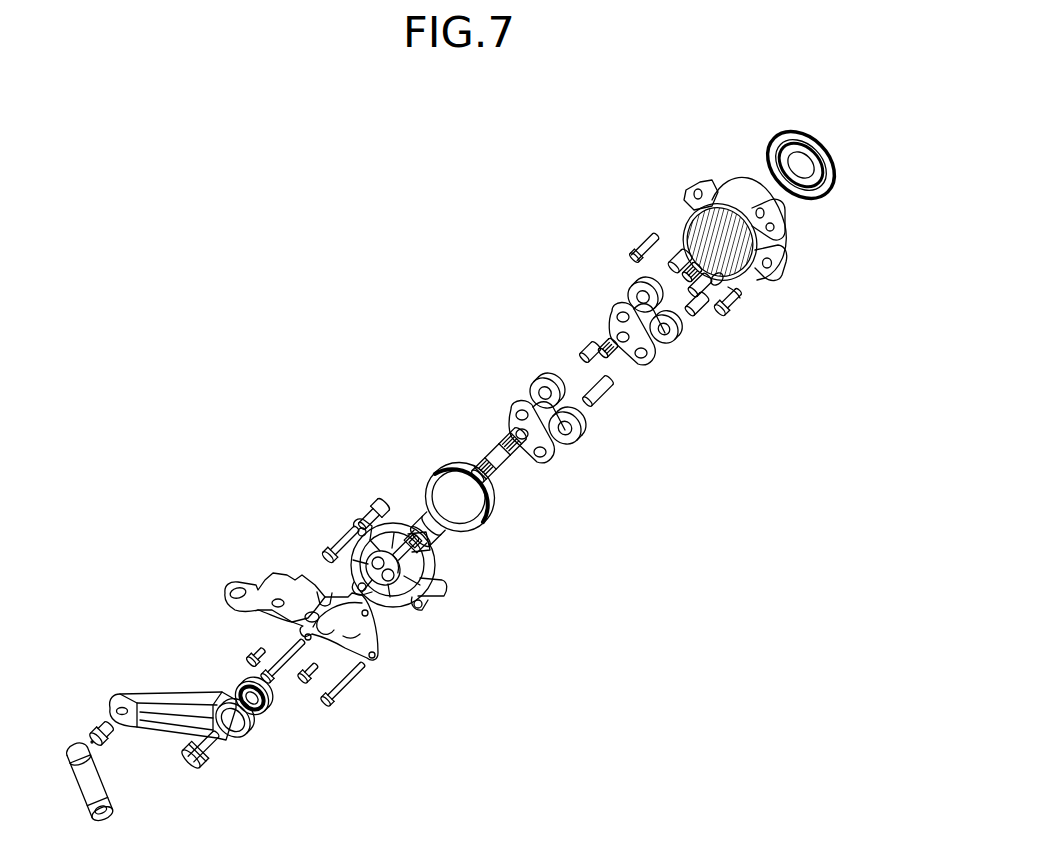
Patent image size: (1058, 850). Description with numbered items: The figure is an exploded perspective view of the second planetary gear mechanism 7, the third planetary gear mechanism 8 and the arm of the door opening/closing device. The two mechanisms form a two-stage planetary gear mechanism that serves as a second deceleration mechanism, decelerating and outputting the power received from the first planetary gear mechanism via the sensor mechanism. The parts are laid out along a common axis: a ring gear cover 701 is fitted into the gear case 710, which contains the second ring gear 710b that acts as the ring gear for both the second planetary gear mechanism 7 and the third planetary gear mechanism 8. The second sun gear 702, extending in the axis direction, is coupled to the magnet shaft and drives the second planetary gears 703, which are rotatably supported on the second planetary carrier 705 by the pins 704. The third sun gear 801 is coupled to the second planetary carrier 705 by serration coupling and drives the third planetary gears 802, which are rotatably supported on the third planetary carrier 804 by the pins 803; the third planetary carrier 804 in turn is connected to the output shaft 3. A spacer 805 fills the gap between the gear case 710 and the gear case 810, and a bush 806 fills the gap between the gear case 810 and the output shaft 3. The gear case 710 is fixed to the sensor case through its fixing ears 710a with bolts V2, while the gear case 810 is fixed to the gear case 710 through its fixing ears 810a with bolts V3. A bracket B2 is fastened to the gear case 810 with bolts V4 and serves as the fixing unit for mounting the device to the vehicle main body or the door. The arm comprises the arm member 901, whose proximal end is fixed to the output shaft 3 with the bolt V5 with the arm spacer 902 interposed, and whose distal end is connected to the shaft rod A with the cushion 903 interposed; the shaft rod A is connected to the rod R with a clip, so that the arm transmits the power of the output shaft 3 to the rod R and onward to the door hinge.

The output shaft 3 is at (495, 436).
The second planetary gear mechanism 7 is at (840, 240).
The ring gear cover 701 is at (803, 190).
The gear case 710 is at (768, 250).
The fixing ears 710a is at (700, 190).
The second ring gear 710b is at (700, 240).
The second sun gear 702 is at (738, 296).
The pins 704 is at (697, 308).
The second planetary gears 703 is at (671, 334).
The second planetary carrier 705 is at (644, 354).
The third planetary gear mechanism 8 is at (708, 417).
The third sun gear 801 is at (600, 356).
The pins 803 is at (580, 426).
The third planetary gears 802 is at (553, 453).
The third planetary carrier 804 is at (560, 446).
The spacer 805 is at (500, 500).
The bush 806 is at (436, 568).
The gear case 810 is at (450, 582).
The fixing ears 810a is at (377, 504).
The bracket B2 is at (234, 585).
The bolts V2 is at (633, 251).
The bolts V3 is at (331, 548).
The bolts V4 is at (243, 660).
The bolt V5 is at (193, 765).
The arm member 901 is at (150, 728).
The arm spacer 902 is at (270, 710).
The cushion 903 is at (92, 724).
The shaft rod A is at (90, 740).
The rod R is at (78, 790).